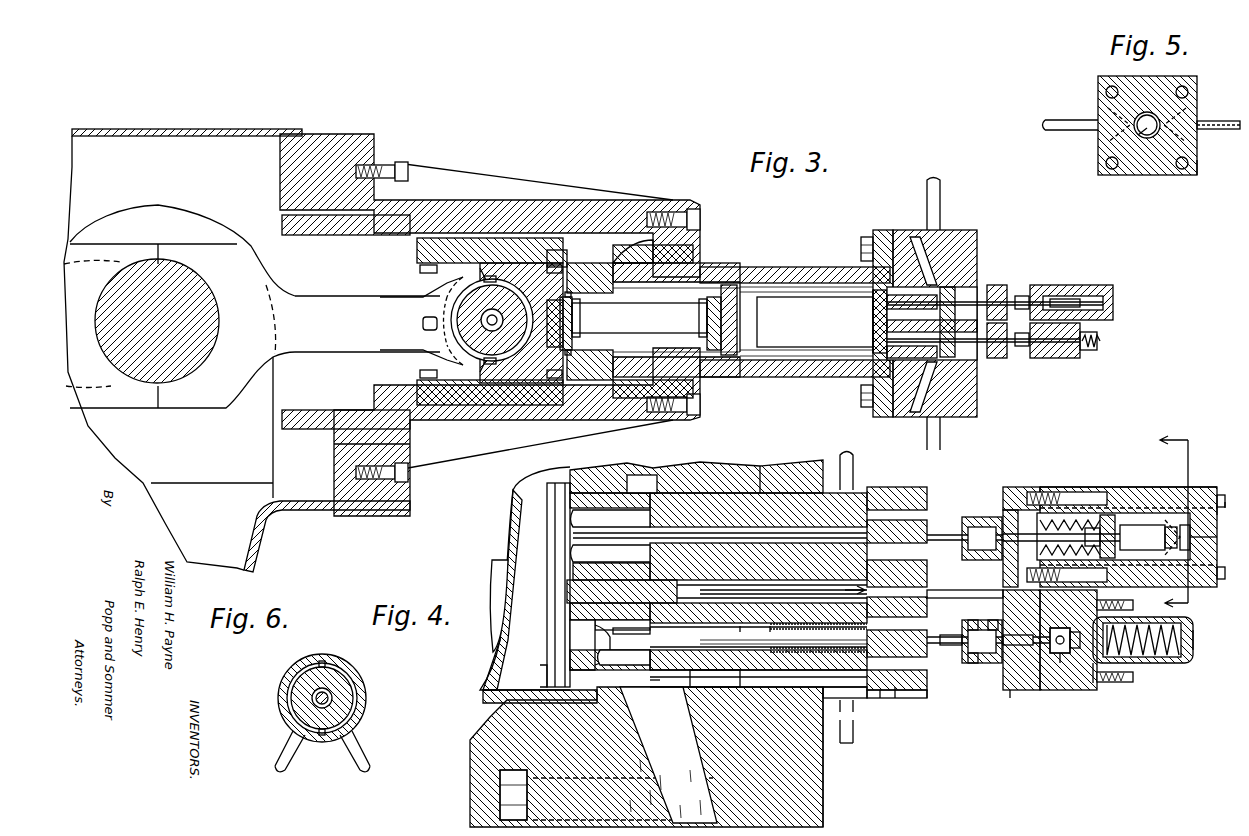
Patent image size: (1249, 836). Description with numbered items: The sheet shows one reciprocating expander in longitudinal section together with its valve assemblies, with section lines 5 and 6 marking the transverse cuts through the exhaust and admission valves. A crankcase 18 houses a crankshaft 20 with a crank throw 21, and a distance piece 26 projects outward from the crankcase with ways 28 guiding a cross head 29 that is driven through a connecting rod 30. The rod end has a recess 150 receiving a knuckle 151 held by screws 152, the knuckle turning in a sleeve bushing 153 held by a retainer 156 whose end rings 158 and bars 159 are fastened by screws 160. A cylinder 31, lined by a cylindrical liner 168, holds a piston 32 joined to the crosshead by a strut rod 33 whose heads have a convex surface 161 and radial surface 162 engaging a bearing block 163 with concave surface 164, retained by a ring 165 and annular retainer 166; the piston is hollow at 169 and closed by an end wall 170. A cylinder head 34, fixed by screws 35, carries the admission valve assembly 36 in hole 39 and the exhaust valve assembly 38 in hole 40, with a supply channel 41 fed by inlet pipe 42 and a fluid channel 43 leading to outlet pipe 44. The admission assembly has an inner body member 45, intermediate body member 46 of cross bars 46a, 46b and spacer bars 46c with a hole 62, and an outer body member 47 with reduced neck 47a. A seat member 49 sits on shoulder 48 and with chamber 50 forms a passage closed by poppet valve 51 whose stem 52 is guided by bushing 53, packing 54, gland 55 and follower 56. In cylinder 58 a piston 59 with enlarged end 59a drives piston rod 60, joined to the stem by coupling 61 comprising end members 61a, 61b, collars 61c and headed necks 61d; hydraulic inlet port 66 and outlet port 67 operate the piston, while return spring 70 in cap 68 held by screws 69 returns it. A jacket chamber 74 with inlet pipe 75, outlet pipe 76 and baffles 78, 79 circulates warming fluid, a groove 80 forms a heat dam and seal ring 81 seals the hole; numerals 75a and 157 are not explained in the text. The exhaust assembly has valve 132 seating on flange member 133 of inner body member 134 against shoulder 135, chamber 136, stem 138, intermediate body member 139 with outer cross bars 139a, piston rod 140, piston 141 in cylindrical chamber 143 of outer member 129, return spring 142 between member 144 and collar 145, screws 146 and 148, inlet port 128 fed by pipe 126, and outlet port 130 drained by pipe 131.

In FIG. 4, the section line 5— 5 is at (1183, 515).
In FIG. 4, the section line 6— 6 is at (858, 735).
In FIG. 3, the crankcase 18 is at (262, 540).
In FIG. 3, the crankshaft 20 is at (108, 232).
In FIG. 3, the crank throw 21 is at (170, 264).
In FIG. 3, the distance piece 26 is at (545, 200).
In FIG. 3, the guide surfaces or ways 28 is at (350, 236).
In FIG. 3, the cross head 29 is at (560, 262).
In FIG. 3, the connecting rod 30 is at (330, 297).
In FIG. 3, the cylinder 31 is at (790, 267).
In FIG. 4, the cylinder 31 is at (475, 748).
In FIG. 3, the piston 32 is at (800, 302).
In FIG. 4, the piston 32 is at (510, 527).
In FIG. 3, the strut rod 33 is at (650, 284).
In FIG. 3, the cylinder head 34 is at (975, 235).
In FIG. 4, the cylinder head 34 is at (824, 790).
In FIG. 3, the screws 35 is at (861, 240).
In FIG. 4, the screws 35 is at (500, 798).
In FIG. 3, the admission valve assembly 36 is at (1063, 358).
In FIG. 4, the admission valve assembly 36 is at (1200, 649).
In FIG. 3, the exhaust valve assembly 38 is at (1110, 277).
In FIG. 5, the exhaust valve assembly 38 is at (1098, 78).
In FIG. 4, the exhaust valve assembly 38 is at (1218, 488).
In FIG. 4, the hole 39 is at (840, 726).
In FIG. 4, the hole 40 is at (750, 490).
In FIG. 3, the fluid supply channel 41 is at (914, 413).
In FIG. 3, the inlet pipe 42 is at (941, 434).
In FIG. 4, the inlet pipe 42 is at (907, 458).
In FIG. 3, the fluid channel 43 is at (915, 236).
In FIG. 4, the fluid channel 43 is at (672, 480).
In FIG. 3, the outlet pipe 44 is at (940, 191).
In FIG. 6, the inner body member 45 is at (277, 696).
In FIG. 4, the intermediate body member 46 is at (920, 700).
In FIG. 4, the inner cross bar 46a is at (905, 700).
In FIG. 4, the outer cross bar 46b is at (1008, 698).
In FIG. 4, the spacer bars 46c is at (938, 690).
In FIG. 4, the outer body member 47 is at (685, 766).
In FIG. 4, the reduced neck 47a is at (1033, 690).
In FIG. 4, the annular shoulder 48 is at (545, 679).
In FIG. 4, the seat member 49 is at (590, 645).
In FIG. 4, the chamber 50 is at (610, 660).
In FIG. 4, the admission poppet valve 51 is at (600, 626).
In FIG. 6, the valve stem 52 is at (332, 694).
In FIG. 4, the valve stem 52 is at (631, 626).
In FIG. 6, the guide bushing 53 is at (328, 700).
In FIG. 4, the guide bushing 53 is at (684, 633).
In FIG. 4, the sleeve packing 54 is at (782, 623).
In FIG. 4, the gland 55 is at (850, 628).
In FIG. 4, the follower 56 is at (945, 655).
In FIG. 4, the cylinder 58 is at (1053, 690).
In FIG. 4, the piston 59 is at (1073, 640).
In FIG. 4, the outer end of piston 59a is at (1107, 683).
In FIG. 4, the piston rod 60 is at (1020, 665).
In FIG. 4, the coupling 61 is at (975, 665).
In FIG. 4, the end member 61a is at (968, 625).
In FIG. 4, the end member 61b is at (995, 624).
In FIG. 4, the collars 61c is at (972, 665).
In FIG. 4, the headed neck portion 61d is at (987, 640).
In FIG. 4, the hole 62 is at (1015, 590).
In FIG. 4, the inlet port 66 is at (1060, 690).
In FIG. 4, the outlet port 67 is at (1075, 655).
In FIG. 4, the cap 68 is at (1188, 660).
In FIG. 4, the screws 69 is at (1130, 670).
In FIG. 4, the return spring 70 is at (1193, 630).
In FIG. 6, the jacket chamber 74 is at (346, 680).
In FIG. 4, the jacket chamber 74 is at (725, 625).
In FIG. 6, the inlet pipe 75 is at (290, 753).
In FIG. 4, the inlet pipe 75 is at (700, 688).
In FIG. 4, the port 75a is at (897, 680).
In FIG. 6, the outlet pipe 76 is at (355, 753).
In FIG. 4, the outlet pipe 76 is at (848, 706).
In FIG. 6, the baffle 78 is at (322, 736).
In FIG. 4, the baffle 78 is at (748, 627).
In FIG. 6, the baffle 79 is at (324, 660).
In FIG. 4, the baffle 79 is at (770, 628).
In FIG. 4, the annular groove 80 is at (680, 672).
In FIG. 4, the seal ring 81 is at (660, 688).
In FIG. 5, the pipe 126 is at (1218, 130).
In FIG. 5, the inlet port 128 is at (1190, 121).
In FIG. 4, the inlet port 128 is at (1215, 540).
In FIG. 5, the outer member 129 is at (1196, 176).
In FIG. 4, the outer member 129 is at (1128, 486).
In FIG. 5, the outlet port 130 is at (1108, 106).
In FIG. 4, the outlet port 130 is at (1175, 560).
In FIG. 5, the pipe 131 is at (1052, 132).
In FIG. 4, the exhaust valve 132 is at (575, 517).
In FIG. 4, the annular flange member 133 is at (590, 562).
In FIG. 4, the inner body member 134 is at (800, 490).
In FIG. 4, the shoulder 135 is at (550, 505).
In FIG. 4, the chamber 136 is at (718, 510).
In FIG. 4, the valve stem 138 is at (720, 533).
In FIG. 4, the intermediate body member 139 is at (905, 487).
In FIG. 4, the outer cross bars 139a is at (1015, 487).
In FIG. 4, the piston rod 140 is at (1061, 537).
In FIG. 5, the piston 141 is at (1145, 138).
In FIG. 4, the piston 141 is at (1185, 523).
In FIG. 4, the return spring 142 is at (1065, 518).
In FIG. 5, the cylindrical chamber 143 is at (1147, 112).
In FIG. 4, the cylindrical chamber 143 is at (1148, 537).
In FIG. 4, the member 144 is at (1105, 513).
In FIG. 4, the collar 145 is at (1089, 537).
In FIG. 4, the screws 146 is at (1040, 492).
In FIG. 5, the screws 148 is at (1112, 170).
In FIG. 4, the screws 148 is at (1218, 508).
In FIG. 3, the partial cylindrical recess 150 is at (486, 324).
In FIG. 3, the knuckle 151 is at (492, 320).
In FIG. 3, the screws 152 is at (422, 323).
In FIG. 3, the sleeve bushing 153 is at (515, 383).
In FIG. 3, the retainer 156 is at (445, 294).
In FIG. 3, the jaw face 157 is at (445, 305).
In FIG. 3, the end rings 158 is at (448, 353).
In FIG. 3, the bars 159 is at (482, 268).
In FIG. 3, the screws 160 is at (492, 276).
In FIG. 3, the spherical convex outer surface 161 is at (558, 300).
In FIG. 3, the annular radial inner surface 162 is at (580, 318).
In FIG. 3, the bearing block 163 is at (570, 358).
In FIG. 3, the spherical concave surface 164 is at (568, 355).
In FIG. 3, the ring 165 is at (706, 304).
In FIG. 3, the annular retainer 166 is at (592, 293).
In FIG. 3, the cylindrical liner 168 is at (705, 343).
In FIG. 3, the hollow portion 169 is at (815, 322).
In FIG. 3, the end wall 170 is at (870, 315).